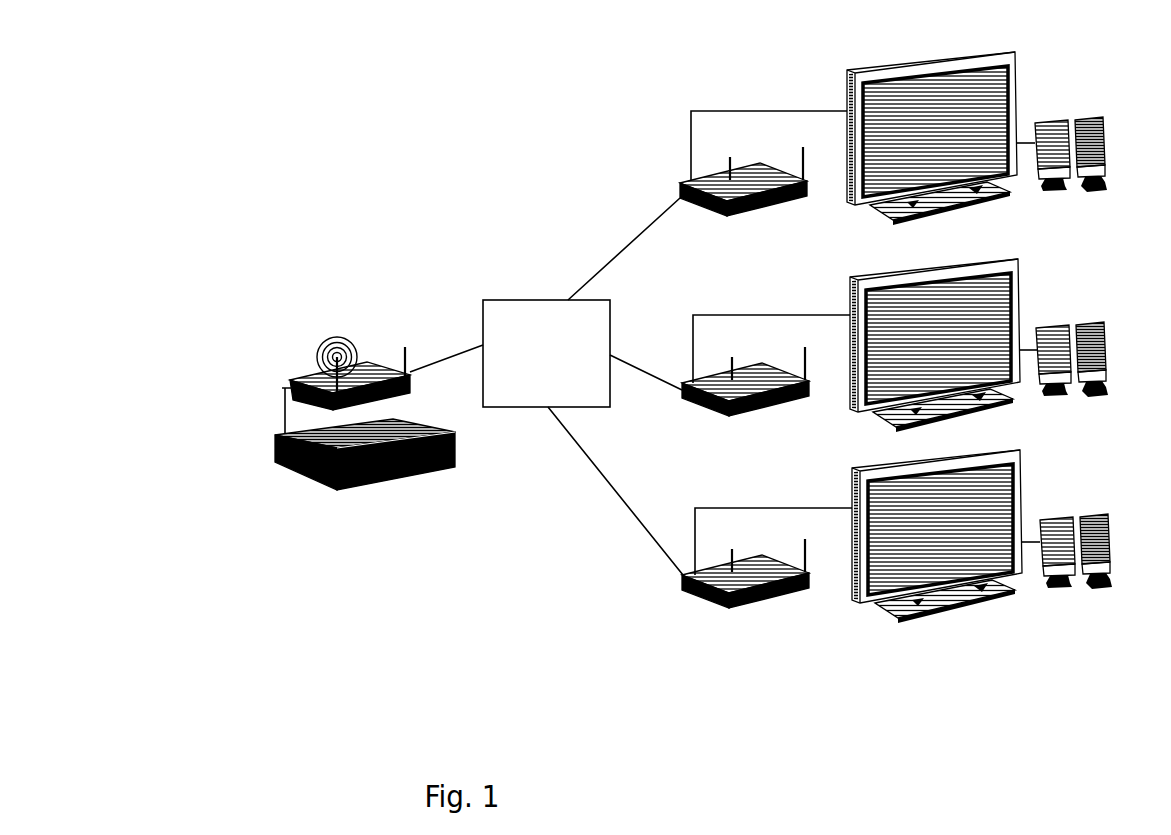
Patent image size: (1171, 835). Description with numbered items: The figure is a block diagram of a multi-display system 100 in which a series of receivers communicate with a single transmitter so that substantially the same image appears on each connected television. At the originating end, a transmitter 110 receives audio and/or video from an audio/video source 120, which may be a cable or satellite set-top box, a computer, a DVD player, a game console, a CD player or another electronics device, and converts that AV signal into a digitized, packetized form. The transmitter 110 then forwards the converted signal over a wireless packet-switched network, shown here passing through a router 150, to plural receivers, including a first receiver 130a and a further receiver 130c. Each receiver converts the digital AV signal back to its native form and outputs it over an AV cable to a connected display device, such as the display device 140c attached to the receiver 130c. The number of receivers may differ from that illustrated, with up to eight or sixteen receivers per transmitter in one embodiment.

The multi-display system 100 is at (285, 57).
The transmitter 110 is at (315, 383).
The audio/video source 120 is at (277, 468).
The receiver 130a is at (678, 187).
The receiver 130c is at (697, 590).
The display device 140c is at (958, 607).
The router 150 is at (546, 353).